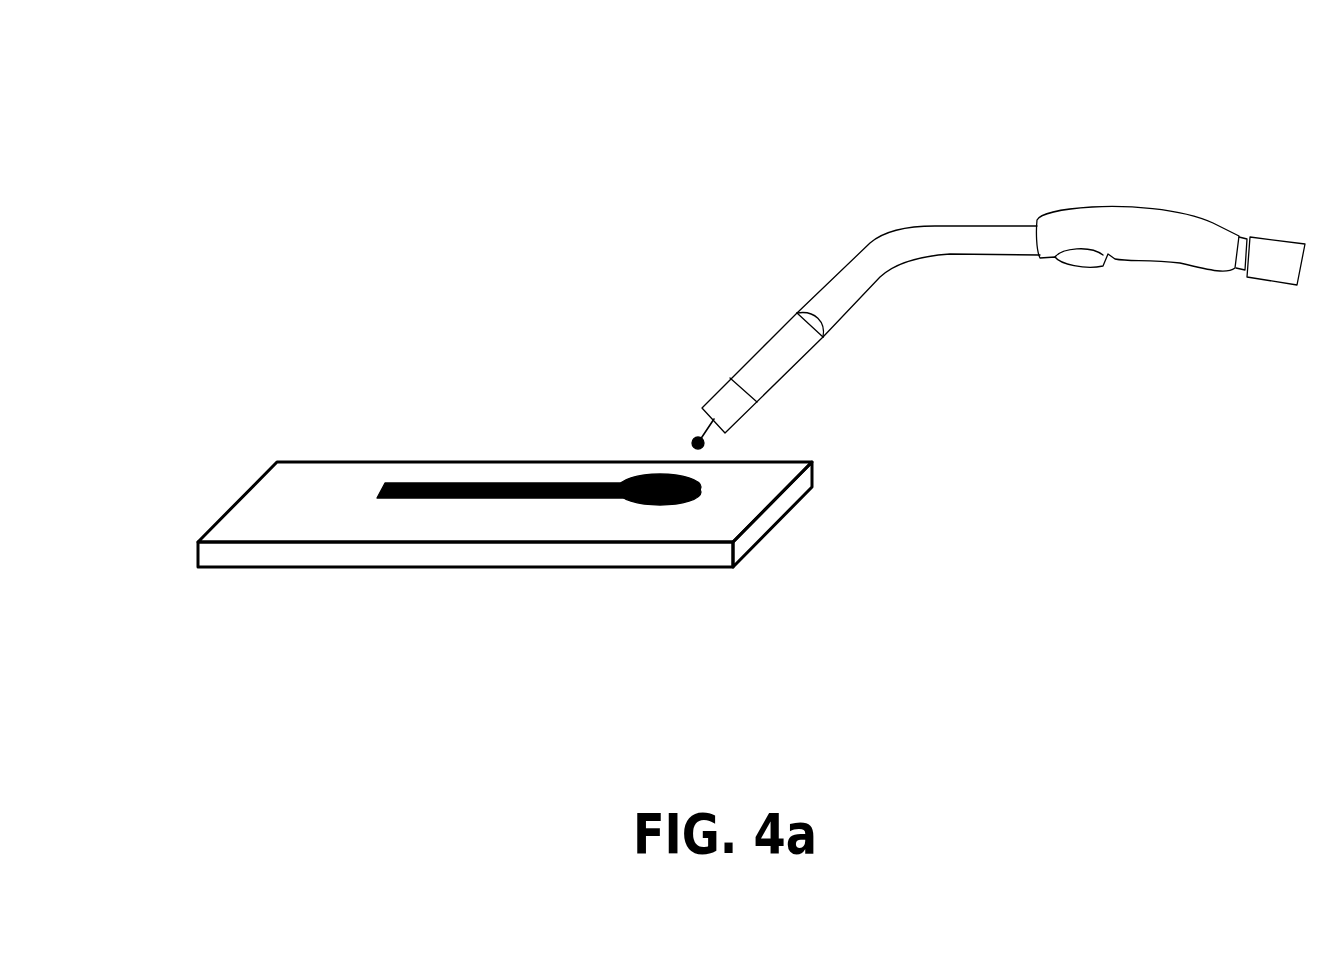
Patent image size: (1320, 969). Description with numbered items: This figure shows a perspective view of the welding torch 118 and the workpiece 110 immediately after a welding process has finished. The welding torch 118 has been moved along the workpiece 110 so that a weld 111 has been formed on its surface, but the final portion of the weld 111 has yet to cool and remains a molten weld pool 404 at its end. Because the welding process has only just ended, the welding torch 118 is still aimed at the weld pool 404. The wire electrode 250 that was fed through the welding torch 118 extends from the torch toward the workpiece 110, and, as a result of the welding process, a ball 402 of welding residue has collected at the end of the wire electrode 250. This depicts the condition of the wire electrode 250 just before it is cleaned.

The workpiece 110 is at (198, 555).
The weld 111 is at (509, 479).
The welding torch 118 is at (1152, 161).
The wire electrode 250 is at (698, 430).
The ball 402 is at (689, 443).
The molten weld pool 404 is at (706, 488).